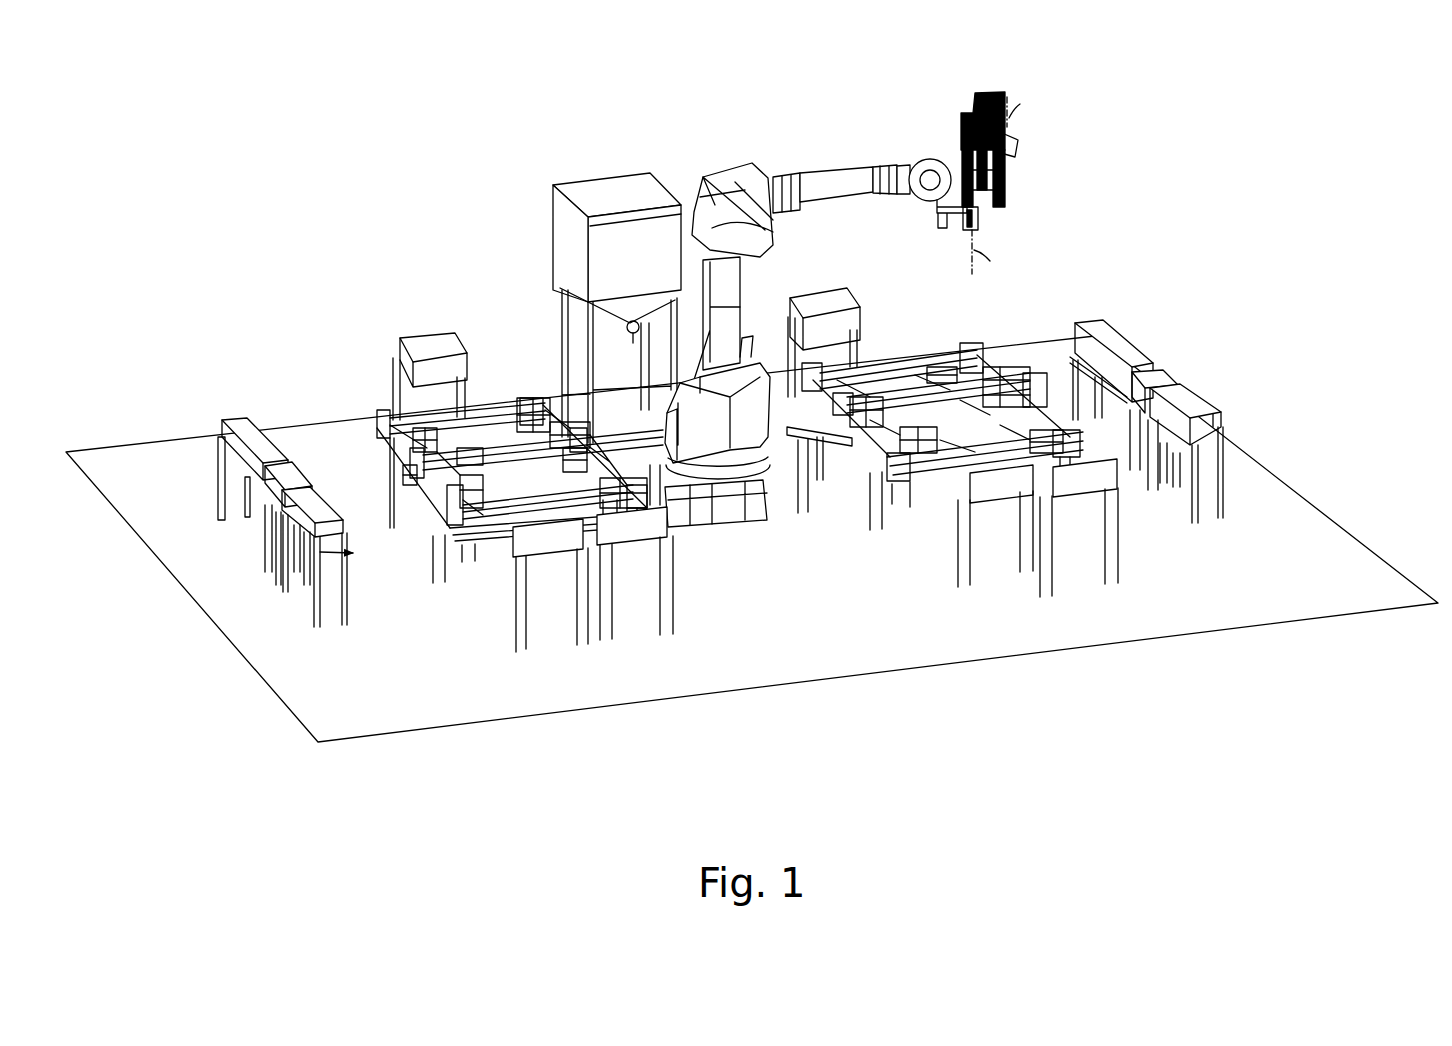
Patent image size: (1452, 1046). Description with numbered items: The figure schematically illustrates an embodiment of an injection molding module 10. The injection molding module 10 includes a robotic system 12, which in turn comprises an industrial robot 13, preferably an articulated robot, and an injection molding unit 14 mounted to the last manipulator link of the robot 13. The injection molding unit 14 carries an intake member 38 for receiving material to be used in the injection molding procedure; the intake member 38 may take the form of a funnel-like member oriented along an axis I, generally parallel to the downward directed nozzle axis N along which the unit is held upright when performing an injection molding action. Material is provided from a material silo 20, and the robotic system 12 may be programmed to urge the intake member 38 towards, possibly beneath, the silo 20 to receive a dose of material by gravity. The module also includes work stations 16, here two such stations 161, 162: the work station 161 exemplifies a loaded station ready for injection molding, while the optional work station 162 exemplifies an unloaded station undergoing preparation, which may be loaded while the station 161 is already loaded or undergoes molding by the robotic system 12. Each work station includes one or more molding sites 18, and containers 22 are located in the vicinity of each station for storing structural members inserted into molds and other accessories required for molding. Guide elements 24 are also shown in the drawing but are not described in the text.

The injection molding module 10 is at (285, 162).
The robotic system 12 is at (1008, 67).
The industrial robot 13 is at (833, 155).
The injection molding unit 14 is at (1048, 183).
The intake member 38 is at (1018, 140).
The material silo 20 is at (629, 204).
The containers 22 is at (834, 292).
The guide rails 24 is at (987, 442).
The molding sites 18 is at (1058, 413).
The work station 16 is at (838, 772).
The loaded work station 161 is at (500, 580).
The unloaded work station 162 is at (918, 550).